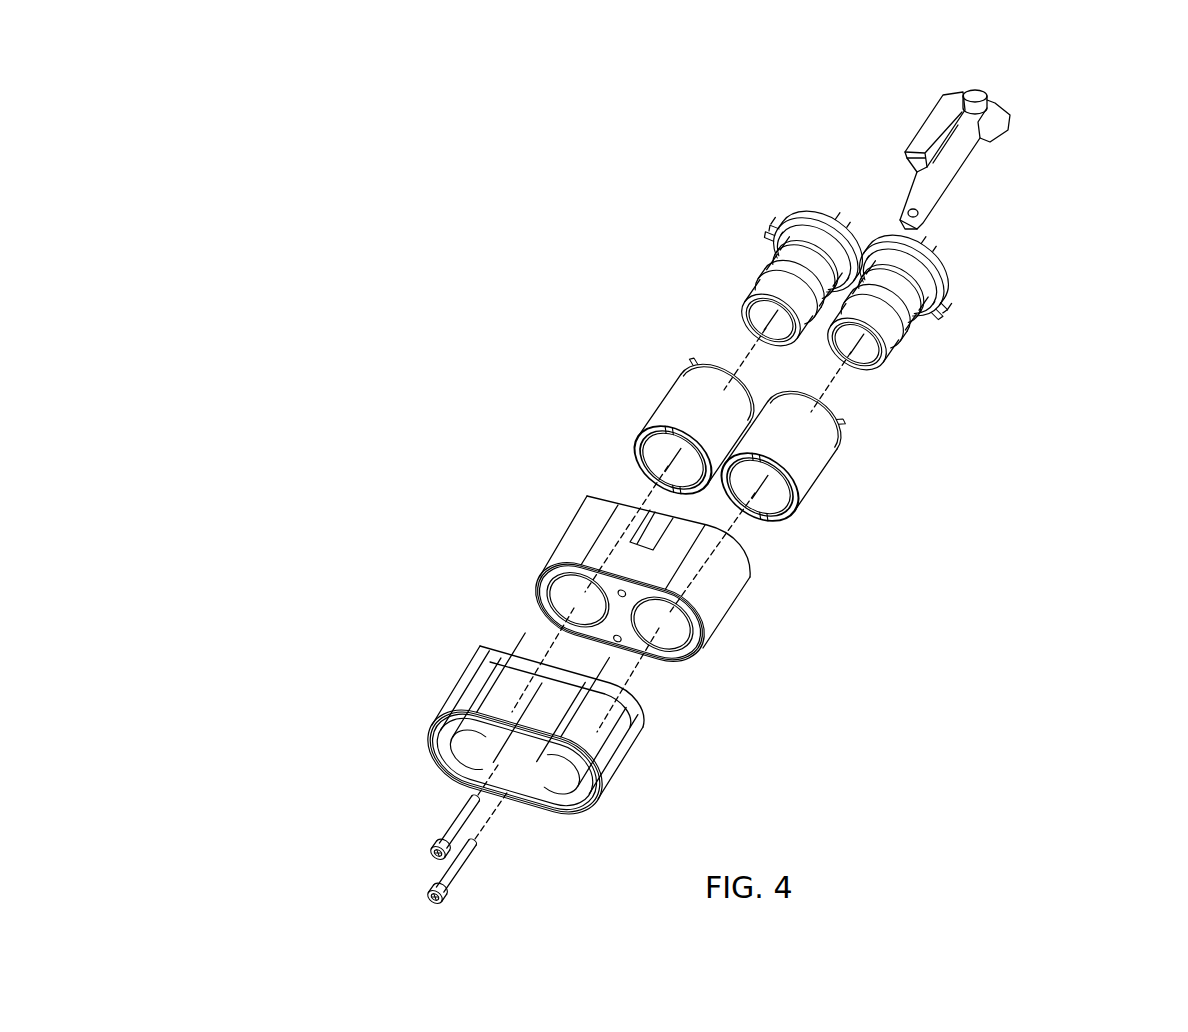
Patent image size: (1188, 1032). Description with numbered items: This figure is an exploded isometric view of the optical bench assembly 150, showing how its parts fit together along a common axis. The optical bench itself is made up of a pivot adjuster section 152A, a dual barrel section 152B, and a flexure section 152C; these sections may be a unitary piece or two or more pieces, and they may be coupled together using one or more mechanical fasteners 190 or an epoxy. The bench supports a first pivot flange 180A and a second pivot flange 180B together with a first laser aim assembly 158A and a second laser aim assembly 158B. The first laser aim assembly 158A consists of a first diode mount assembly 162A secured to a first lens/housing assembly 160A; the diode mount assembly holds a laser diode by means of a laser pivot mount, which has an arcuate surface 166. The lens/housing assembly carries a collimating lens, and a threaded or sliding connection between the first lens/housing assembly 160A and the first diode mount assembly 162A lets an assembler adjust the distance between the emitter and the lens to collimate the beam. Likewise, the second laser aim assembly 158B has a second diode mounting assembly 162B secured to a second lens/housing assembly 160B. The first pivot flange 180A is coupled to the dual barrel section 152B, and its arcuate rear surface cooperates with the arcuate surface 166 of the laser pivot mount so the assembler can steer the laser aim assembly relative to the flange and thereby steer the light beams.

The optical bench assembly 150 is at (392, 370).
The pivot adjuster section 152A is at (905, 135).
The dual barrel section 152B is at (570, 512).
The flexure section 152C is at (473, 653).
The first laser aim assembly 158A is at (1000, 364).
The second laser aim assembly 158B is at (661, 248).
The first lens/housing assembly 160A is at (898, 348).
The second lens/housing assembly 160B is at (762, 297).
The first diode mount assembly 162A is at (912, 327).
The second diode mounting assembly 162B is at (765, 272).
The arcuate surface 166 is at (812, 302).
The first pivot flange 180A is at (808, 487).
The second pivot flange 180B is at (662, 417).
The mechanical fasteners 190 is at (432, 893).